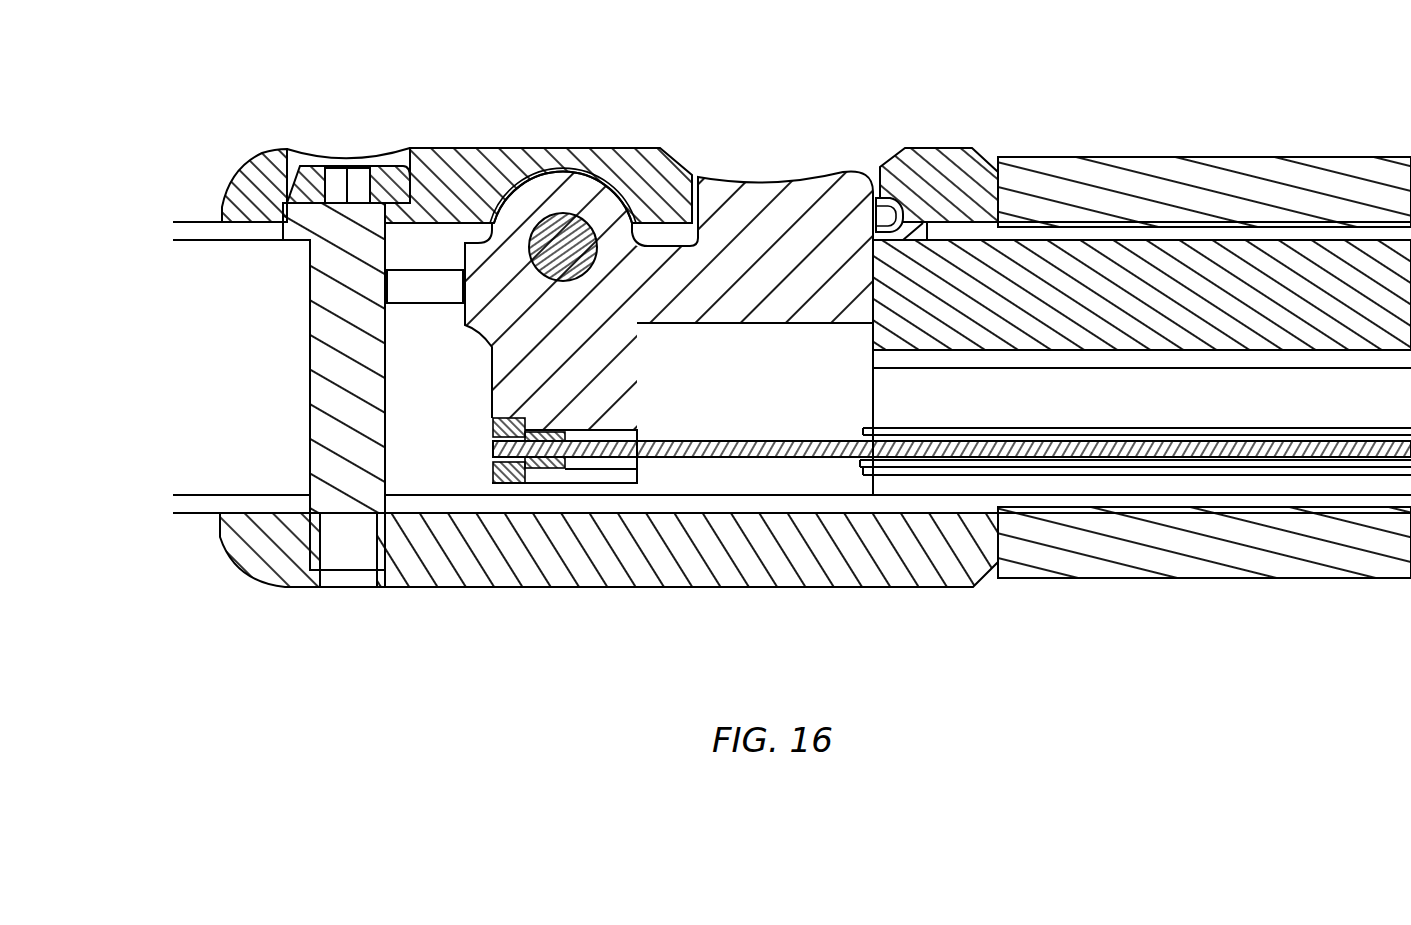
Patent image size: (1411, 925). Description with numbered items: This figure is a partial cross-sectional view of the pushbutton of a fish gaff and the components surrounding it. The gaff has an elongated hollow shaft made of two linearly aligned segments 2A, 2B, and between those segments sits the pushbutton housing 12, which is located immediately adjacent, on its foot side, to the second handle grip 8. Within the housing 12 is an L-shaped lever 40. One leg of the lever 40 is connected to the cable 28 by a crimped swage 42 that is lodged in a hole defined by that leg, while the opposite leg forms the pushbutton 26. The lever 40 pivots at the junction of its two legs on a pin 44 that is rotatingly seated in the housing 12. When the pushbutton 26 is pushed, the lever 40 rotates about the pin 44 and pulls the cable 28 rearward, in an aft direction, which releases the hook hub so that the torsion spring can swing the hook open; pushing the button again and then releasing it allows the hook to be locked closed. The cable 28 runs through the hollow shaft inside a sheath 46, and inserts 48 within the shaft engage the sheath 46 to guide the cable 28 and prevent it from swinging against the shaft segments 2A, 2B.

The shaft segment 2A is at (192, 222).
The shaft forward segment 2B is at (1098, 230).
The second handle grip 8 is at (1268, 157).
The pushbutton housing 12 is at (572, 587).
The pushbutton 26 is at (776, 178).
The cable 28 is at (768, 441).
The L-shaped lever 40 is at (500, 360).
The crimped swage 42 is at (493, 428).
The pin 44 is at (571, 222).
The sheath 46 is at (1188, 473).
The inserts 48 is at (1148, 277).